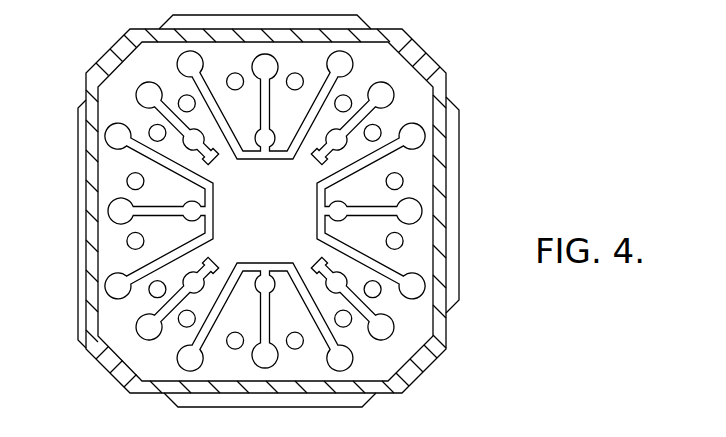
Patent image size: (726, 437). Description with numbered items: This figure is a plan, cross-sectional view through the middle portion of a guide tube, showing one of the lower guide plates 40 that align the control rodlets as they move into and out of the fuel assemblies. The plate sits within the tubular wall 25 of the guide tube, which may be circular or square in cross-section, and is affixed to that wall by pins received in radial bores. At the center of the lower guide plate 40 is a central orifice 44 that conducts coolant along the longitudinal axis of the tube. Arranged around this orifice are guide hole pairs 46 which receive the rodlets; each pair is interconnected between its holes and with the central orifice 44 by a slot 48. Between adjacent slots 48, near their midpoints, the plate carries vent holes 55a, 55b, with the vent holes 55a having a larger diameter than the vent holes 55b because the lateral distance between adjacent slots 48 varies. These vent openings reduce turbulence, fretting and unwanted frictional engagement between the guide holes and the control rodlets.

The tubular wall 25 is at (90, 323).
The lower guide plate 40 is at (118, 110).
The central orifice 44 is at (283, 224).
The guide hole pair 46 is at (391, 92).
The slot 48 is at (355, 107).
The vent hole 55a is at (127, 241).
The vent hole 55b is at (151, 296).